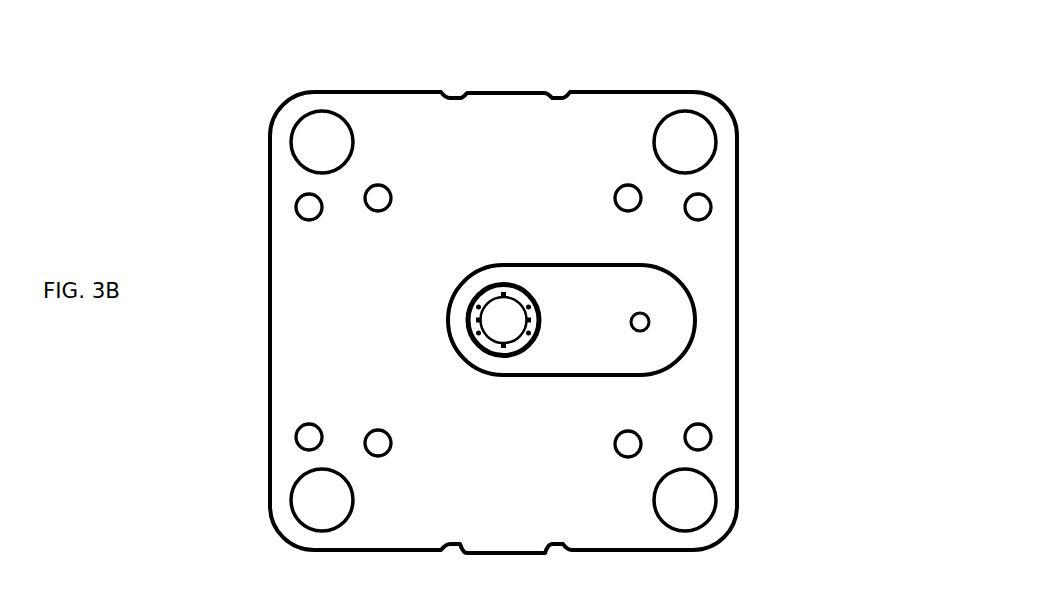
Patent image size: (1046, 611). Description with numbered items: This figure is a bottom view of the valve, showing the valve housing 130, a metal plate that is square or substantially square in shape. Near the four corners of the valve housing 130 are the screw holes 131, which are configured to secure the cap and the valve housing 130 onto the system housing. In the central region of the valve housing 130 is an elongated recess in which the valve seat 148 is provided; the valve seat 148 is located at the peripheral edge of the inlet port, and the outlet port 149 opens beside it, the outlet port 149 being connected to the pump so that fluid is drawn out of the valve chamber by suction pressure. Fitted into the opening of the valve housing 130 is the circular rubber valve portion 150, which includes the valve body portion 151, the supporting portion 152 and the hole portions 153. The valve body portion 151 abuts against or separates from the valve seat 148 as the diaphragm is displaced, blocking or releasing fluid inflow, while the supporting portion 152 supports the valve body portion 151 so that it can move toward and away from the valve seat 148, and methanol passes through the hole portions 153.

The valve housing 130 is at (666, 90).
The screw holes 131 is at (308, 143).
The valve seat 148 is at (640, 357).
The outlet port 149 is at (648, 322).
The valve portion 150 is at (532, 320).
The valve body portion 151 is at (508, 317).
The supporting portion 152 is at (537, 322).
The hole portions 153 is at (470, 333).